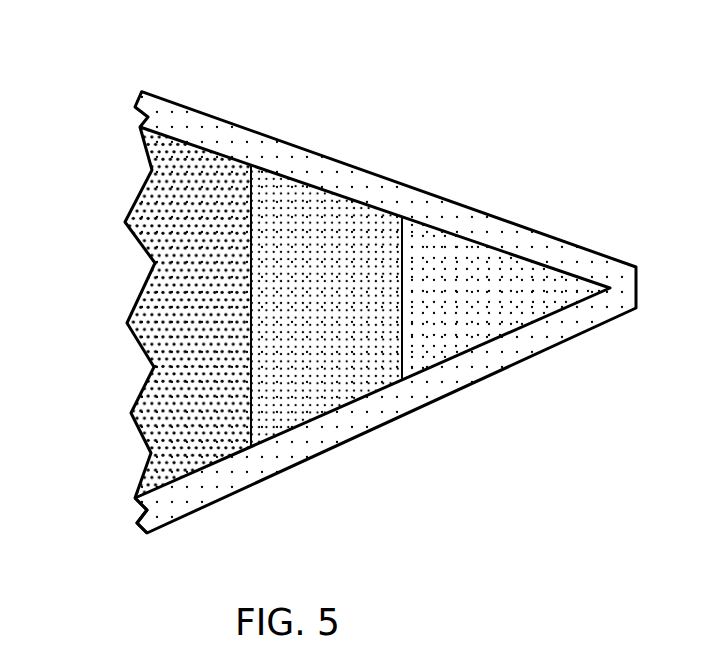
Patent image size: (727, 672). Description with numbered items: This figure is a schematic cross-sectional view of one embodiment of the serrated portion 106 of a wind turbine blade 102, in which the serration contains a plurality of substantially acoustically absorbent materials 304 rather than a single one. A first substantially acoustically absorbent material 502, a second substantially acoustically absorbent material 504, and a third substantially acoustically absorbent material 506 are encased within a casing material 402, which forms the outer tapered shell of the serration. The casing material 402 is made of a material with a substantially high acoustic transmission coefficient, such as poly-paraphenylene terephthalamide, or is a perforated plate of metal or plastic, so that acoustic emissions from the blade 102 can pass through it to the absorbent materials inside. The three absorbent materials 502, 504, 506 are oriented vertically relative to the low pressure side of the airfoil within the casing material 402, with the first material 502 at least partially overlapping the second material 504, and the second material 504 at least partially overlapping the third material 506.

The blade 102 is at (333, 273).
The serrated portion 106 is at (416, 170).
The substantially acoustically absorbent material 304 is at (318, 312).
The casing material 402 is at (135, 516).
The first substantially acoustically absorbent material 502 is at (141, 347).
The second substantially acoustically absorbent material 504 is at (328, 411).
The third substantially acoustically absorbent material 506 is at (510, 330).